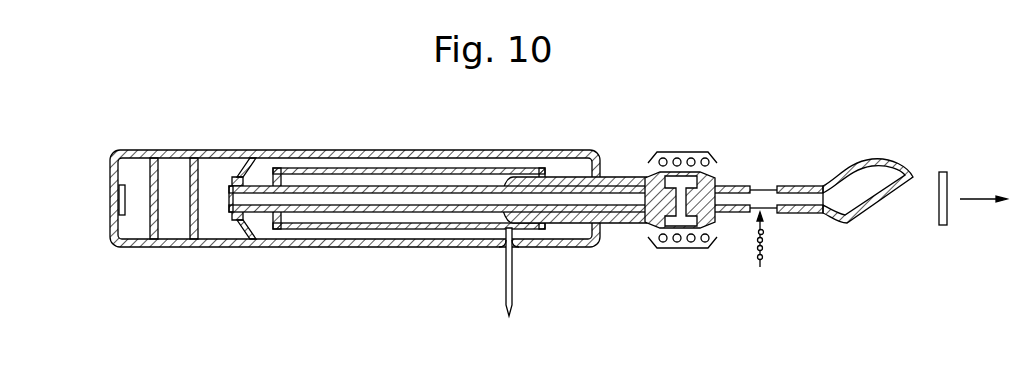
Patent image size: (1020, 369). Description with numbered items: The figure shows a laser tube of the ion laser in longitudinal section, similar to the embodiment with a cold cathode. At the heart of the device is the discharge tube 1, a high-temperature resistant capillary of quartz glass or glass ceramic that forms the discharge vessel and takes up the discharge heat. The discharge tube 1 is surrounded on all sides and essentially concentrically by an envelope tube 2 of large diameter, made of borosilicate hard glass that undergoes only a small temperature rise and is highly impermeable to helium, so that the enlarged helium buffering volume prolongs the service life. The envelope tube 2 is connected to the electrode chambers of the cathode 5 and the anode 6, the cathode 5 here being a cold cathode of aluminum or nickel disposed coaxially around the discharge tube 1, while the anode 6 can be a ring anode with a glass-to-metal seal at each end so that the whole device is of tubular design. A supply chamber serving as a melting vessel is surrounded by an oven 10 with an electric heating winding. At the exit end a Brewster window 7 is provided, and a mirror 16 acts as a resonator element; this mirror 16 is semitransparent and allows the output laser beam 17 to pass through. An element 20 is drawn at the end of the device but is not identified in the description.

The discharge tube 1 is at (359, 188).
The envelope tube 2 is at (448, 150).
The cathode 5 is at (300, 168).
The anode 6 is at (762, 188).
The Brewster window 7 is at (887, 204).
The oven 10 is at (680, 152).
The mirror 16 is at (941, 172).
The output laser beam 17 is at (972, 198).
The end chamber 20 is at (132, 188).